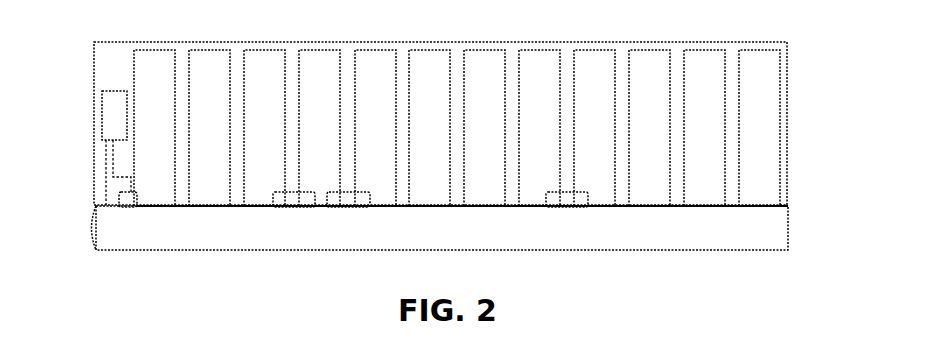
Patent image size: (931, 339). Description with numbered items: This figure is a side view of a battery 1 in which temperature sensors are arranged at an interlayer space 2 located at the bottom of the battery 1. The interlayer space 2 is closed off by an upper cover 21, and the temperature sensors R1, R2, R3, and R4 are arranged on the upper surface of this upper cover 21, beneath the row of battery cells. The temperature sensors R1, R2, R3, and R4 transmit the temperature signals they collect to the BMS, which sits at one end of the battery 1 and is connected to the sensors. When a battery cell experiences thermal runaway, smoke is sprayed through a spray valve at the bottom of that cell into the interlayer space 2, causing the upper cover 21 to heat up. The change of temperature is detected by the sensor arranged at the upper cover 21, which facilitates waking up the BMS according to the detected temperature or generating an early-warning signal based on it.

The battery 1 is at (787, 42).
The interlayer space 2 is at (777, 243).
The upper cover 21 is at (788, 207).
The element BMS is at (85, 148).
The temperature sensor R1 is at (294, 214).
The temperature sensor R2 is at (131, 214).
The temperature sensor R3 is at (348, 214).
The temperature sensor R4 is at (567, 214).